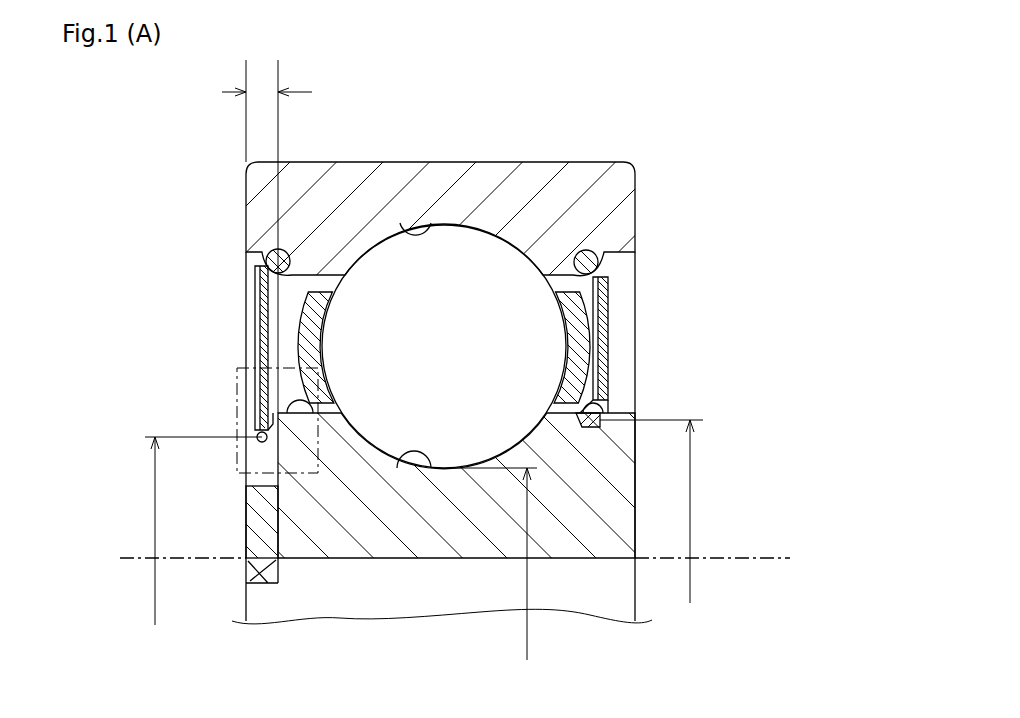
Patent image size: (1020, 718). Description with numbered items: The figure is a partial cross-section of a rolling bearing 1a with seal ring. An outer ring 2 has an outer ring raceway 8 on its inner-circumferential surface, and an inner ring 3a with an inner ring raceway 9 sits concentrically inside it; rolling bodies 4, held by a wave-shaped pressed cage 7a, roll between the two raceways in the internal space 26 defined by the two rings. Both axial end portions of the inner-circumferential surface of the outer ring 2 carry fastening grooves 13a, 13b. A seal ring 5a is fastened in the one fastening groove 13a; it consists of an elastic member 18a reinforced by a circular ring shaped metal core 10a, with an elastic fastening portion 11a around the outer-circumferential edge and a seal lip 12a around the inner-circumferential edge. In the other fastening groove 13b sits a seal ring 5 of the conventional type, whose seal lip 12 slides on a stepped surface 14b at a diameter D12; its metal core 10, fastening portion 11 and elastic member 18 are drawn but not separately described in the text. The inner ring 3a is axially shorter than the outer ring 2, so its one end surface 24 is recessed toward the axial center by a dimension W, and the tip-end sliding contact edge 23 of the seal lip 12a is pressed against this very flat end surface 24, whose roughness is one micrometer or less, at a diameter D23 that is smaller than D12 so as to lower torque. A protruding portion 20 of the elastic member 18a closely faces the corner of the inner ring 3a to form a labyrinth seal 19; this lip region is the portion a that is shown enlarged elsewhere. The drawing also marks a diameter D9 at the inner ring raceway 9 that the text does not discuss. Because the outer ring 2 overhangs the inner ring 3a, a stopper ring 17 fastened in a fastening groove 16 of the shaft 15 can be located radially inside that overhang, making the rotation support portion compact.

The rolling bearing with seal ring 1a is at (645, 160).
The outer ring 2 is at (439, 182).
The inner ring 3a is at (605, 538).
The rolling bodies 4 is at (447, 305).
The seal ring 5 is at (615, 341).
The seal ring 5a is at (247, 314).
The cage 7a is at (568, 298).
The outer ring raceway 8 is at (400, 228).
The inner ring raceway 9 is at (428, 472).
The core metal 10 is at (600, 312).
The metal core 10a is at (257, 300).
The fixing portion 11 is at (588, 250).
The elastic fastening portion 11a is at (270, 256).
The seal lip 12 is at (598, 430).
The seal lip 12a is at (262, 433).
The fastening groove 13a is at (267, 257).
The fastening groove 13b is at (600, 262).
The stepped surface 14b is at (600, 405).
The shaft 15 is at (755, 572).
The fastening groove 16 is at (247, 568).
The stopper ring 17 is at (243, 518).
The elastic member 18 is at (601, 374).
The elastic member 18a is at (257, 325).
The labyrinth seal 19 is at (311, 416).
The protruding portion 20 is at (331, 410).
The sliding contact edge 23 is at (281, 422).
The one end surface 24 is at (247, 482).
The internal space 26 is at (340, 284).
The portion a is at (327, 380).
The dimension W is at (264, 92).
The raceway diameter D9 is at (527, 575).
The diameter D12 is at (692, 580).
The diameter D23 is at (153, 520).